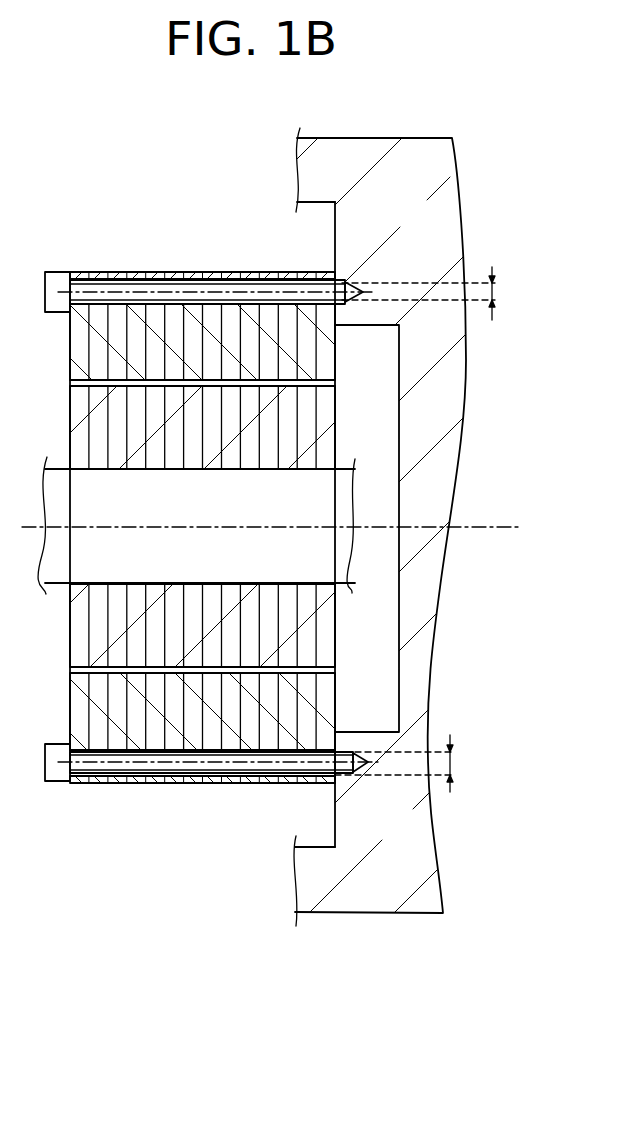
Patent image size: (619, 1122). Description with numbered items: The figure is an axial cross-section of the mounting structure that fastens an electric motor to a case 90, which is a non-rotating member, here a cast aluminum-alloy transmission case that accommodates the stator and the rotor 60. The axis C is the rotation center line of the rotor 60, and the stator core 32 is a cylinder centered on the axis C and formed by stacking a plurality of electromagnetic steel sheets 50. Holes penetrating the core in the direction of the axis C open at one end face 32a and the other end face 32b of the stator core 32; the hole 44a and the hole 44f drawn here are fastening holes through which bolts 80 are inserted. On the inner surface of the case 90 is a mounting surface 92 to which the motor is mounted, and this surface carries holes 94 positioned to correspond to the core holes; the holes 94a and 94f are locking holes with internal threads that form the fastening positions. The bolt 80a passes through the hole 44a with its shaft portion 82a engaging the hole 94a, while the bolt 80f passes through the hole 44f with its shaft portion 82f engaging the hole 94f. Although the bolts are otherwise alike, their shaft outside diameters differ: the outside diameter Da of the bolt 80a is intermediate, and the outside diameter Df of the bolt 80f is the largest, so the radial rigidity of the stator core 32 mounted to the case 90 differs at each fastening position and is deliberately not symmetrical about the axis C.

The stator core 32 is at (170, 266).
The one end face 32a is at (72, 742).
The other end face 32b is at (336, 746).
The hole 44a is at (197, 240).
The hole 44f is at (225, 770).
The electromagnetic steel sheets 50 is at (142, 272).
The rotor 60 is at (193, 440).
The bolt 80 is at (195, 520).
The bolt 80a is at (192, 235).
The bolt 80f is at (195, 812).
The shaft portion 82a is at (250, 292).
The shaft portion 82f is at (157, 767).
The case 90 is at (427, 563).
The mounting surface 92 is at (328, 785).
The holes 94 is at (394, 523).
The hole 94a is at (352, 283).
The hole 94f is at (356, 771).
The outside diameter Da is at (434, 293).
The outside diameter Df is at (409, 763).
The axis C is at (282, 529).